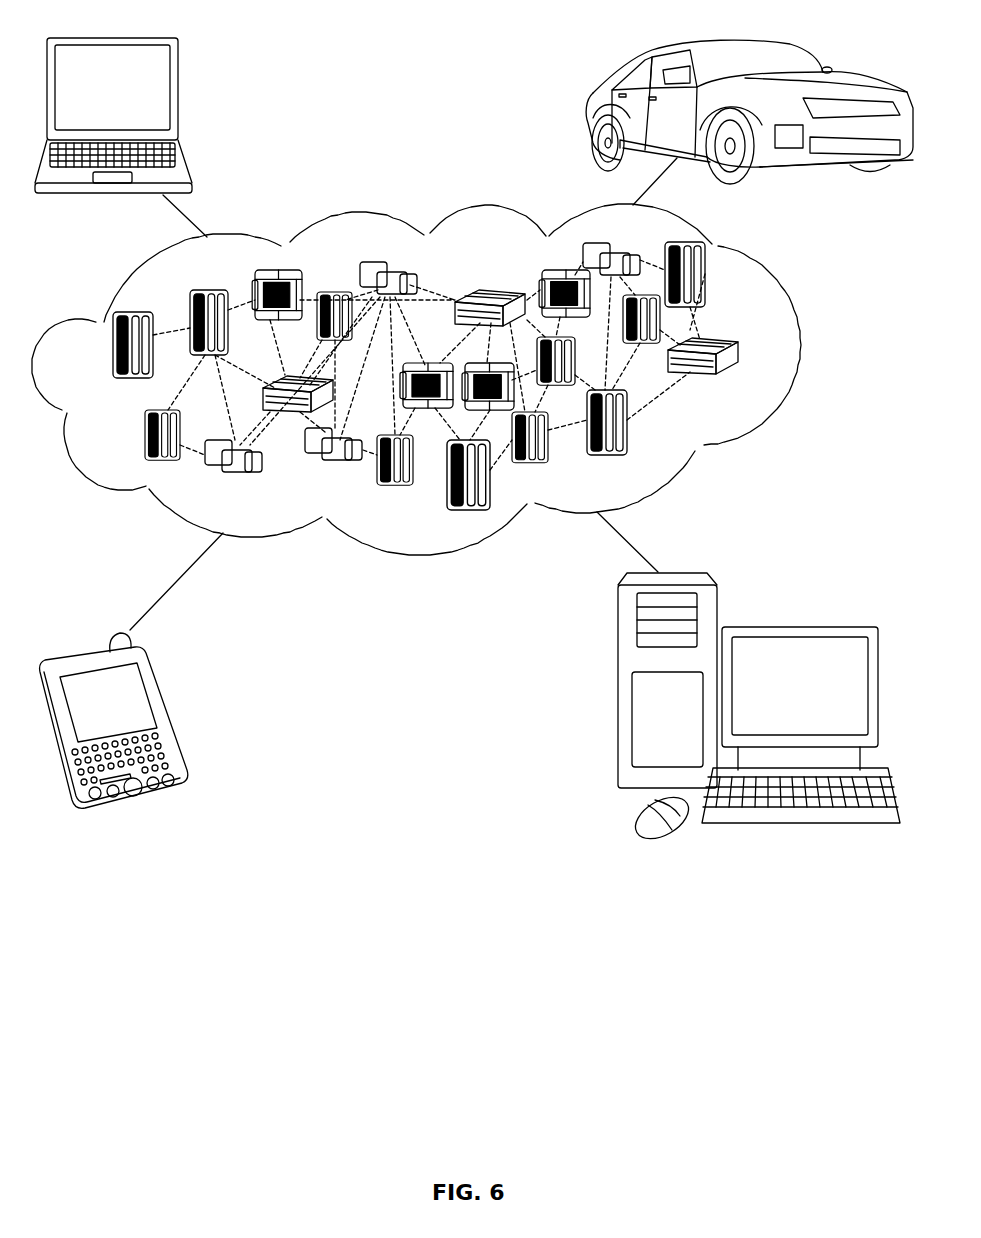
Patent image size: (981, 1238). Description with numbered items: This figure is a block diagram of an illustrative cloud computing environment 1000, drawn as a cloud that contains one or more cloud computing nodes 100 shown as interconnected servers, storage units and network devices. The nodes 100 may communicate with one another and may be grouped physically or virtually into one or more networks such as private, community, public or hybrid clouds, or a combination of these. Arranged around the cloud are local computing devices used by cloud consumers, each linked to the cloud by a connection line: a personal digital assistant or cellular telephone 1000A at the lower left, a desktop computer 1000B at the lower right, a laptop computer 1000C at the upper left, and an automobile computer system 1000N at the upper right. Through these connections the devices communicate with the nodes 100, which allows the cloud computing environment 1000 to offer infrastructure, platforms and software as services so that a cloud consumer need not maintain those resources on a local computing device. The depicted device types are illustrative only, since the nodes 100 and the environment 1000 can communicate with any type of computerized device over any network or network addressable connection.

The laptop computer 1000C is at (178, 98).
The automobile computer system 1000N is at (590, 113).
The cloud computing environment 1000 is at (797, 353).
The cloud computing nodes 100 is at (745, 383).
The personal digital assistant (PDA) or cellular telephone 1000A is at (168, 715).
The desktop computer 1000B is at (795, 625).